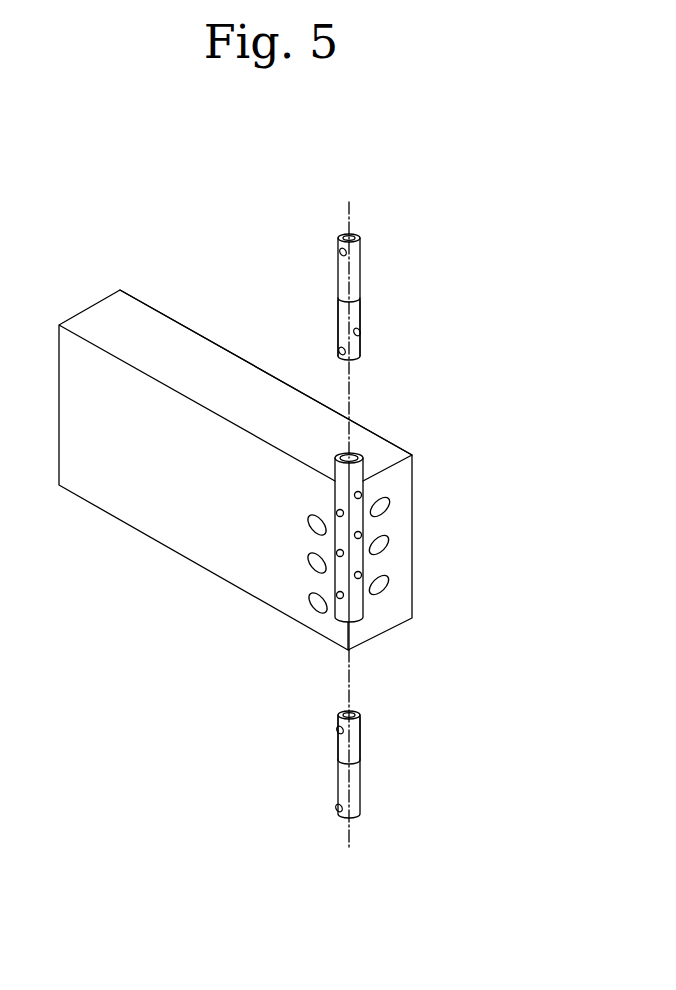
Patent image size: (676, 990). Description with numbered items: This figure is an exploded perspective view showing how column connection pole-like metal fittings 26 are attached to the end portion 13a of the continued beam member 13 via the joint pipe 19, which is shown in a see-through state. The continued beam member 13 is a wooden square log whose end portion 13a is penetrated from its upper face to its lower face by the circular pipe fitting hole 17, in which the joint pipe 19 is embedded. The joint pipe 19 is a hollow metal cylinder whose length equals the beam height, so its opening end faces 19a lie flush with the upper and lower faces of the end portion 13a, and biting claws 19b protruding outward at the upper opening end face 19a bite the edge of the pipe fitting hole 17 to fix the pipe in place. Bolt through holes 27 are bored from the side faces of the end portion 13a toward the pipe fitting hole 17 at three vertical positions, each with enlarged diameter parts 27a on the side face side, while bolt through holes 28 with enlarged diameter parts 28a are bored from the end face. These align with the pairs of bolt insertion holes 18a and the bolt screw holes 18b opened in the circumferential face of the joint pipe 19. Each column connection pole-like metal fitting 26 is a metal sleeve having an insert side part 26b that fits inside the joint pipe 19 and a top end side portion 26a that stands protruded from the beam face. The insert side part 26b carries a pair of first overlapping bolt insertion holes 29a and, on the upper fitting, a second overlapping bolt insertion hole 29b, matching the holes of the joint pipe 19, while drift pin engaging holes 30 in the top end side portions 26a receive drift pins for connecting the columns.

The continued beam member 13 is at (142, 317).
The end portion 13a is at (290, 437).
The pipe fitting hole 17 is at (353, 458).
The bolt insertion holes 18a is at (338, 553).
The bolt screw holes 18b is at (357, 535).
The joint pipe 19 is at (357, 479).
The opening end faces 19a is at (350, 453).
The biting claws 19b is at (341, 452).
The column connection pole-like metal fittings 26 is at (359, 290).
The top end side portion 26a is at (357, 274).
The insert side part 26b is at (360, 314).
The bolt through holes 27 is at (310, 562).
The enlarged diameter parts 27a is at (313, 600).
The bolt through holes 28 is at (382, 543).
The enlarged diameter parts 28a is at (385, 550).
The first overlapping bolt insertion holes 29a is at (341, 350).
The second overlapping bolt insertion hole 29b is at (360, 332).
The drift pin engaging holes 30 is at (340, 252).